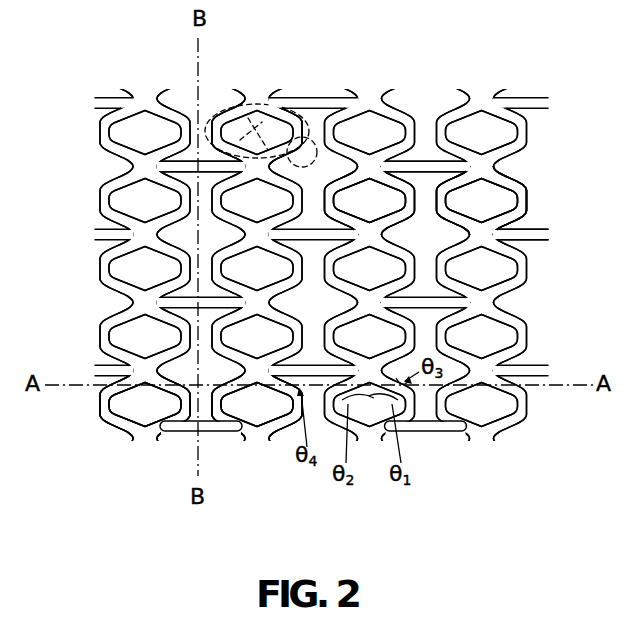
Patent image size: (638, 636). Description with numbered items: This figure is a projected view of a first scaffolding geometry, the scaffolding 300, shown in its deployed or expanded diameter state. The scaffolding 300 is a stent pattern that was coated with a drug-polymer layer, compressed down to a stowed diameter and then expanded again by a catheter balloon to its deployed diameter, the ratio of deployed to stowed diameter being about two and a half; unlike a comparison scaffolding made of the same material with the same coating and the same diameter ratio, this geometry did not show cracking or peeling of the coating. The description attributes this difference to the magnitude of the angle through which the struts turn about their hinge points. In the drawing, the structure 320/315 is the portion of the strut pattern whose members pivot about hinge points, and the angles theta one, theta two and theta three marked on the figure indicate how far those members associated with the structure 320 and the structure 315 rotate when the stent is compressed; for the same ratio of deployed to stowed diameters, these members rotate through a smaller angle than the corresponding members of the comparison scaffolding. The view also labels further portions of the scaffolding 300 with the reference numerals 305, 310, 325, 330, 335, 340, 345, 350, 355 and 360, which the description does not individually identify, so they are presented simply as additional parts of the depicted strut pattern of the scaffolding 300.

The scaffolding 300 is at (514, 444).
The ring / column of cells 305 is at (190, 452).
The cell 310 is at (258, 407).
The structure 315 is at (276, 100).
The structure 320 is at (242, 103).
The flex region 325 is at (304, 150).
The connector 330 is at (162, 159).
The strut 335 is at (514, 178).
The connector 340 is at (540, 231).
The crown 345 is at (510, 205).
The strut 350 is at (467, 218).
The connector 355 is at (414, 160).
The crown / peak 360 is at (373, 158).